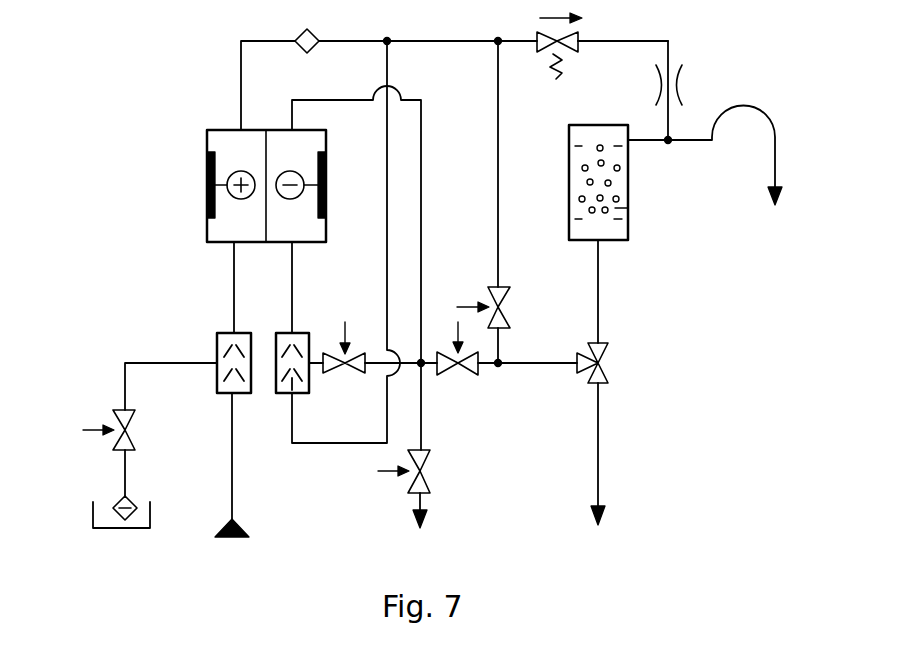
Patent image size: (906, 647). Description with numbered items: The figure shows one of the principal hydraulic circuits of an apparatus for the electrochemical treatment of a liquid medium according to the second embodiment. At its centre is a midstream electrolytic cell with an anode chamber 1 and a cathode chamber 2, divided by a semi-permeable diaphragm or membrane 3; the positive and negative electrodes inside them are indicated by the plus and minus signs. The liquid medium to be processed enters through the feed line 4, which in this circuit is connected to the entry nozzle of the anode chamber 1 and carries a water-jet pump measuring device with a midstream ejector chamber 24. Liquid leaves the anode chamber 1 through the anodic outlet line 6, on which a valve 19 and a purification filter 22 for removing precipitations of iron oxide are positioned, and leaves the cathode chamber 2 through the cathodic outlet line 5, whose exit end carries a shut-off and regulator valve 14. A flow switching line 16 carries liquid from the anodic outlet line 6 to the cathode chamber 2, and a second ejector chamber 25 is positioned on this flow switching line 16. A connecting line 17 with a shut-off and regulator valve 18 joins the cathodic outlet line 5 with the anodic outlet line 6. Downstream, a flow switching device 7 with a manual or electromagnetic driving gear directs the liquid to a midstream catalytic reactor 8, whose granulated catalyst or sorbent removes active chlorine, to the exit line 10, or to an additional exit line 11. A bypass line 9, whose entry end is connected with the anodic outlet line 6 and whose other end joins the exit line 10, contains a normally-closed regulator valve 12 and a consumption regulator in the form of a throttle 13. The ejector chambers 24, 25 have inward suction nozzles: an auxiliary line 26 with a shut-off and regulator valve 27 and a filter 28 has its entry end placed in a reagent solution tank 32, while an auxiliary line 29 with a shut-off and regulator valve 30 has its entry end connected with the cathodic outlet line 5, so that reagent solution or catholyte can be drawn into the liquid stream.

The anode chamber 1 is at (250, 154).
The cathode chamber 2 is at (283, 143).
The diaphragm or membrane 3 is at (265, 224).
The feed line 4 is at (231, 502).
The cathodic outlet line 5 is at (425, 203).
The anodic outlet line 6 is at (240, 62).
The flow switching device 7 is at (608, 363).
The catalytic reactor 8 is at (628, 208).
The bypass line 9 is at (630, 43).
The exit line 10 is at (757, 105).
The additional exit line 11 is at (598, 450).
The regulator valve 12 is at (540, 53).
The throttle 13 is at (680, 85).
The shut-off and regulator valve 14 is at (427, 468).
The flow switching line 16 is at (387, 182).
The connecting line 17 is at (428, 360).
The shut-off and regulator valve 18 is at (458, 378).
The valve 19 is at (493, 285).
The purification filter 22 is at (310, 50).
The ejector chamber 24 is at (218, 333).
The ejector chamber 25 is at (287, 393).
The auxiliary line 26 is at (158, 362).
The shut-off and regulator valve 27 is at (115, 410).
The filter 28 is at (113, 508).
The auxiliary line 29 is at (368, 356).
The shut-off and regulator valve 30 is at (347, 366).
The reagent solution tank 32 is at (118, 530).